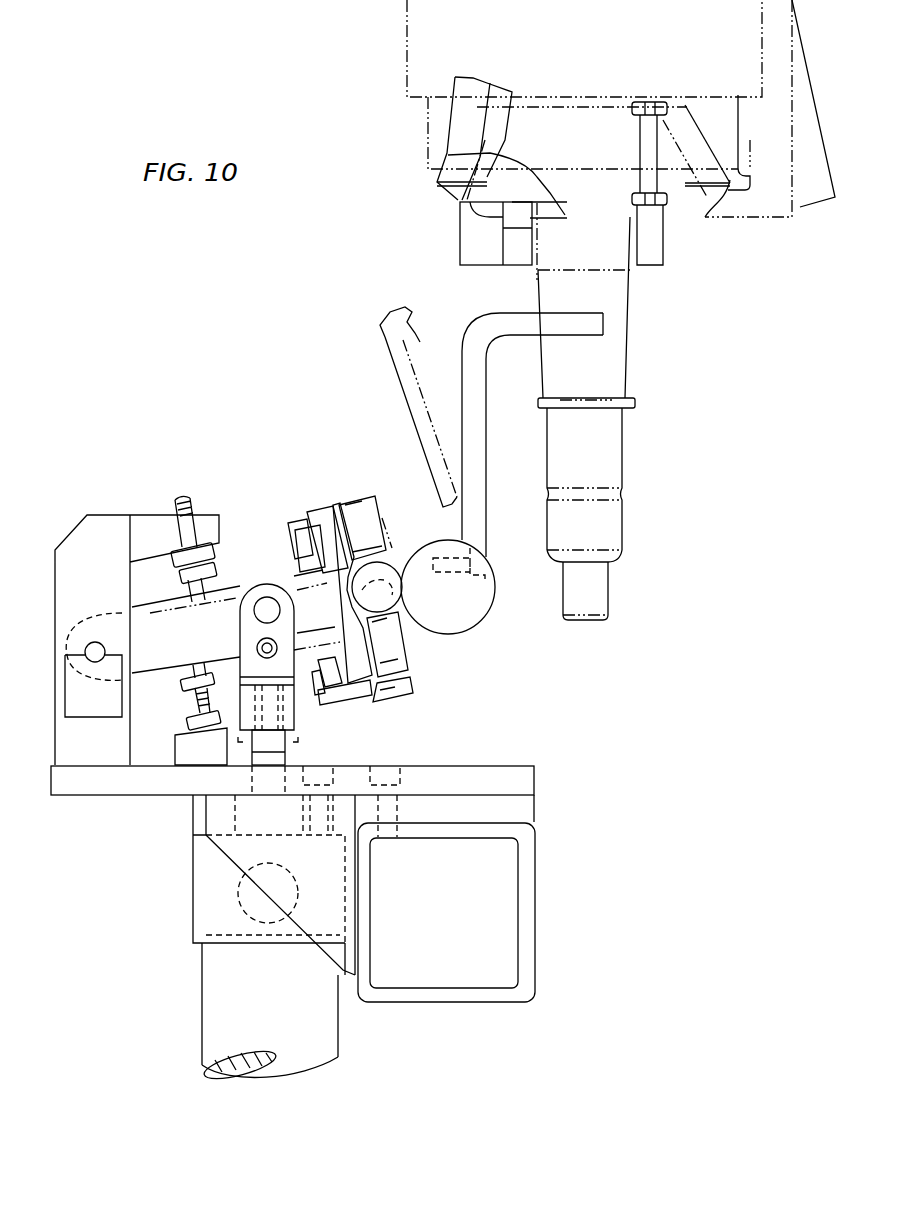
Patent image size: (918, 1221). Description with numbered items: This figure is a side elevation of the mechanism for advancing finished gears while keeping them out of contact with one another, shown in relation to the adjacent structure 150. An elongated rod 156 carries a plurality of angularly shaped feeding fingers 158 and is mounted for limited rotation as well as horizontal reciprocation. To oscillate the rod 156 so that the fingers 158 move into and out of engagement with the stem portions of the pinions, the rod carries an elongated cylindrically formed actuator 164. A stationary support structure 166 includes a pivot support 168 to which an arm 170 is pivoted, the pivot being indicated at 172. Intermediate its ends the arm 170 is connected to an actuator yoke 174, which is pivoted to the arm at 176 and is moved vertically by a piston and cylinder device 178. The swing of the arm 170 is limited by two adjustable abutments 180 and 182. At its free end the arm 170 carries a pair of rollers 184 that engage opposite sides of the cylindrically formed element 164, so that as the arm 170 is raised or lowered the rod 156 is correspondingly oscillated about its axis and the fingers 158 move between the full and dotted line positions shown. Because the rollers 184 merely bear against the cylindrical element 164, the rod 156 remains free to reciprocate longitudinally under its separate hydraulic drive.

The welding head 150 is at (407, 85).
The elongated rod 156 is at (460, 622).
The feeding fingers 158 is at (505, 313).
The cylindrically formed actuator 164 is at (393, 557).
The stationary support structure 166 is at (508, 765).
The pivot support 168 is at (66, 542).
The arm 170 is at (235, 585).
The pivot 172 is at (87, 652).
The actuator yoke 174 is at (297, 717).
The pivot 176 is at (266, 608).
The piston and cylinder device 178 is at (215, 1033).
The adjustable abutment 180 is at (186, 580).
The adjustable abutment 182 is at (193, 705).
The rollers 184 is at (398, 693).